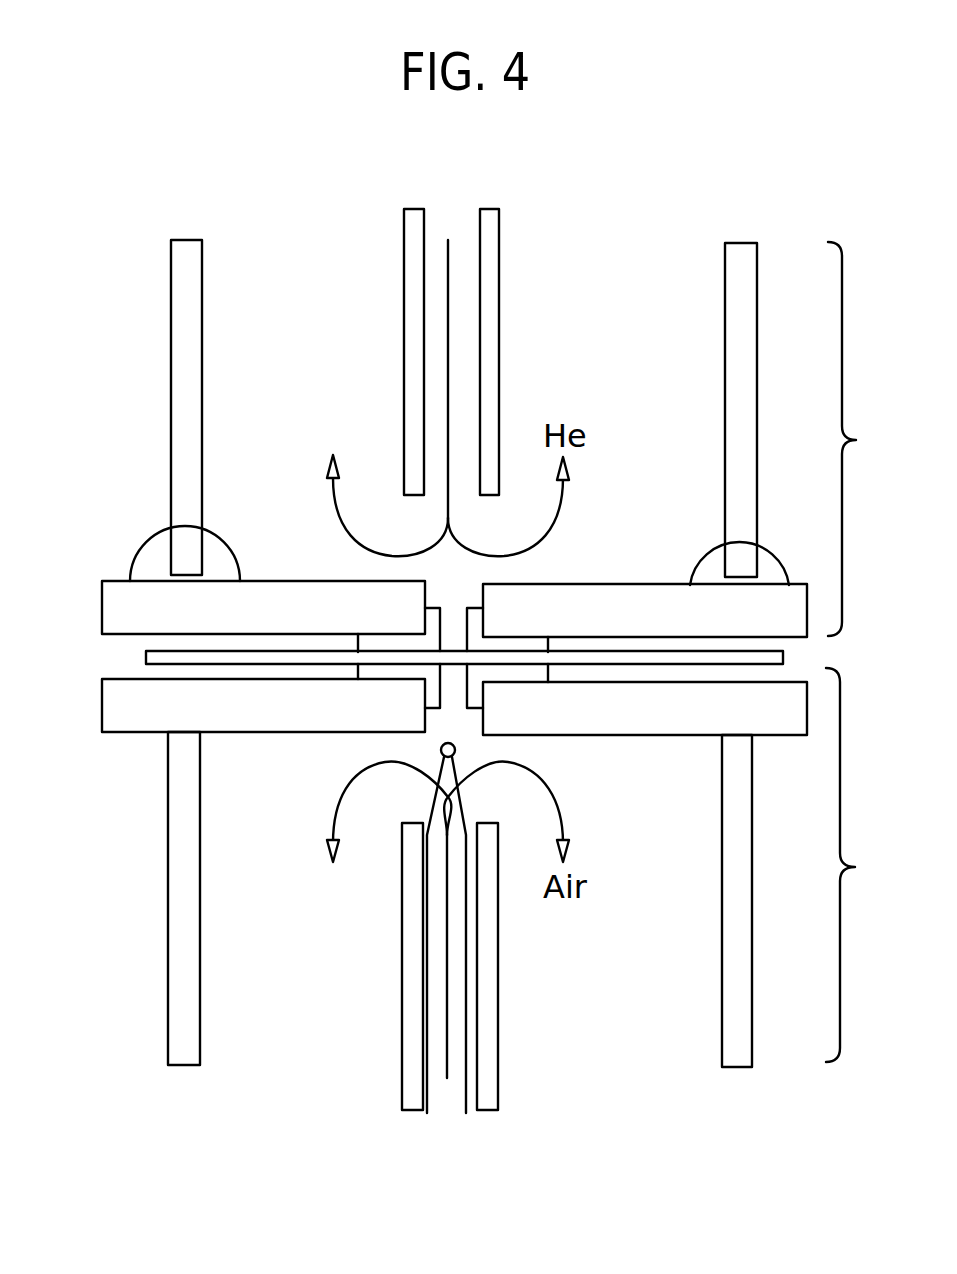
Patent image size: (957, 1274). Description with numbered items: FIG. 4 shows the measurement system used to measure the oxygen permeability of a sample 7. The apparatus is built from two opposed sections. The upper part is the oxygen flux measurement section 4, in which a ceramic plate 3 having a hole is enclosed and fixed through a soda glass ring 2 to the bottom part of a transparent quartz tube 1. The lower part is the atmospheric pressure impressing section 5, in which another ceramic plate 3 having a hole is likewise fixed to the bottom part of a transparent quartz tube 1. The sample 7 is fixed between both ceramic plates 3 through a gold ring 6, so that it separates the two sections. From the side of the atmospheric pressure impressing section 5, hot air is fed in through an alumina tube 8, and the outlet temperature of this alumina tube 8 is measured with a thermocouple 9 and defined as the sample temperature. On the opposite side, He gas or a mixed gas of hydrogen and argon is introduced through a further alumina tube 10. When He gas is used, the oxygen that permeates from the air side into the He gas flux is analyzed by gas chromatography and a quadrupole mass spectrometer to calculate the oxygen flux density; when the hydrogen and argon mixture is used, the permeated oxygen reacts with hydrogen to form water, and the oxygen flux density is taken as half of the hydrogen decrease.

The transparent quartz tube 1 is at (184, 297).
The soda glass ring 2 is at (222, 568).
The ceramic plate 3 is at (617, 605).
The oxygen flux measurement section 4 is at (858, 439).
The atmospheric pressure impressing section 5 is at (857, 865).
The gold ring 6 is at (398, 642).
The sample 7 is at (152, 656).
The alumina tube 8 is at (488, 1055).
The thermocouple 9 is at (440, 750).
The alumina tube 10 is at (490, 303).